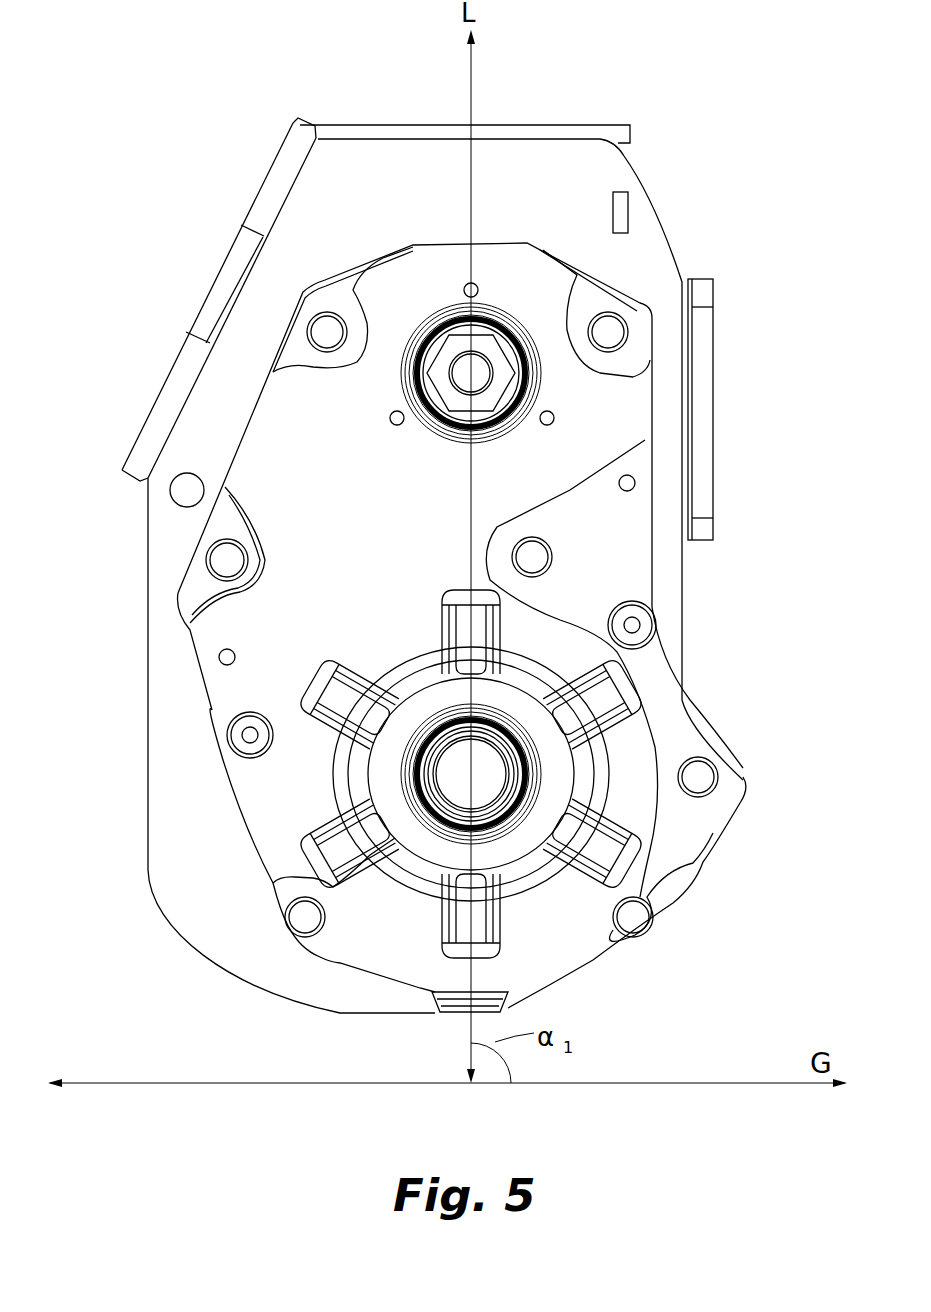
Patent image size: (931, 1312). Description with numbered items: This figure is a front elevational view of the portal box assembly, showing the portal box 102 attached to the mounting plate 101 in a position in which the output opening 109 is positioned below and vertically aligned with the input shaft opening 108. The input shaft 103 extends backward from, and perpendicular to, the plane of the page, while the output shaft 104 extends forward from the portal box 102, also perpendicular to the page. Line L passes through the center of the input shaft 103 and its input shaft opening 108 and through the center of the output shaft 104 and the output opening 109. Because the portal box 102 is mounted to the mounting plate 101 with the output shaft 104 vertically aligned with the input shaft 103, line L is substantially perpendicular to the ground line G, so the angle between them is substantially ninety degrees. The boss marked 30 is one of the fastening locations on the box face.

The mounting plate 101 is at (175, 765).
The portal box 102 is at (267, 777).
The input shaft 103 is at (462, 368).
The output shaft 104 is at (487, 772).
The input shaft opening 108 is at (492, 305).
The output opening 109 is at (443, 723).
The fastening boss 30 is at (557, 557).